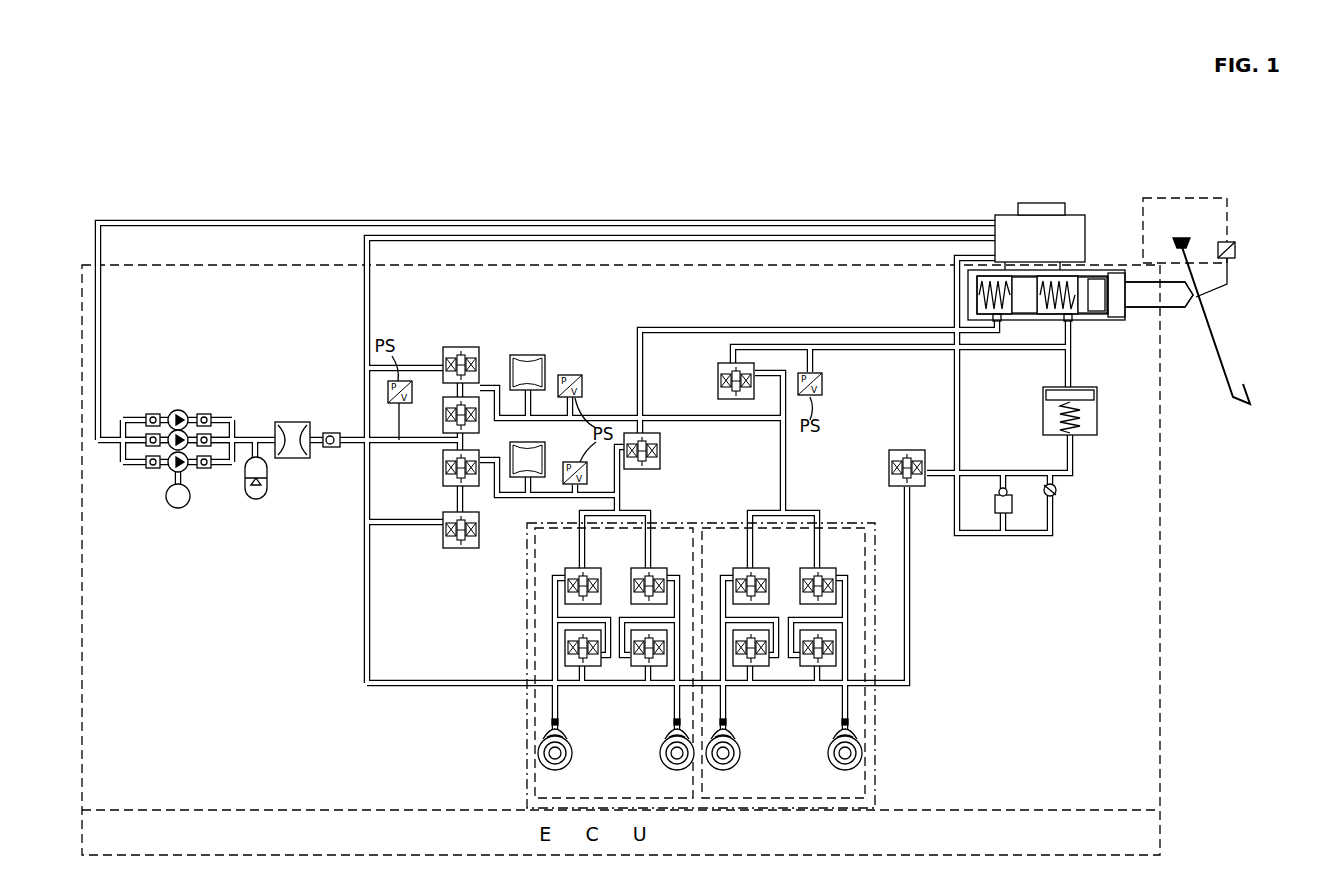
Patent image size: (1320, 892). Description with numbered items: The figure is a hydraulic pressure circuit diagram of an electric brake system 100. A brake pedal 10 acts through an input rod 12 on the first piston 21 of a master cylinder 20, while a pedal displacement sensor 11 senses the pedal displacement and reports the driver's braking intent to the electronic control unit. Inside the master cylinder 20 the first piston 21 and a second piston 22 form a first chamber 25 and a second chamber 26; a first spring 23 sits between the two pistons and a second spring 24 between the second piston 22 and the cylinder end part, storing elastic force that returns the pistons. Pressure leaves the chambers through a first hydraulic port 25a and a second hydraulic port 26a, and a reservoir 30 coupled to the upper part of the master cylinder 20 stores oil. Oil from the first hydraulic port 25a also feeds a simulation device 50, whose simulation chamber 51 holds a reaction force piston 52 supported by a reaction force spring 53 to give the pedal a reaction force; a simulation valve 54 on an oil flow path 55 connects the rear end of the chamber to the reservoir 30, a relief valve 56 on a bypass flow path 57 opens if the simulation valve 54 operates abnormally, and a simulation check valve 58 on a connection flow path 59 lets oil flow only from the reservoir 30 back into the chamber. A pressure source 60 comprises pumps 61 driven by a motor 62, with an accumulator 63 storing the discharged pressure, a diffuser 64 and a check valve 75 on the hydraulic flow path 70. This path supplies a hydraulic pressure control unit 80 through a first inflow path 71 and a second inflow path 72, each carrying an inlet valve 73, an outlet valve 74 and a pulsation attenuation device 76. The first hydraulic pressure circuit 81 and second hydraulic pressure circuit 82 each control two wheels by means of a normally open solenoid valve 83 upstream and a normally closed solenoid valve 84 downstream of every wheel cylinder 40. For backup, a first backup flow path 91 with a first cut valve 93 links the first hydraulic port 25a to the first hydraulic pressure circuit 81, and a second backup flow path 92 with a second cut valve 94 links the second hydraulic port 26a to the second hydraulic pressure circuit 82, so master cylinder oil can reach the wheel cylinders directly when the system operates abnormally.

The electric brake system 100 is at (750, 197).
The brake pedal 10 is at (1232, 376).
The pedal displacement sensor 11 is at (1236, 250).
The input rod 12 is at (1172, 305).
The master cylinder 20 is at (1106, 322).
The first piston 21 is at (1095, 278).
The second piston 22 is at (1022, 290).
The first spring 23 is at (1070, 290).
The second spring 24 is at (979, 295).
The first chamber 25 is at (1053, 290).
The first hydraulic port 25a is at (1072, 321).
The second chamber 26 is at (990, 290).
The second hydraulic port 26a is at (1000, 320).
The reservoir 30 is at (1010, 215).
The wheel cylinder 40 is at (660, 740).
The simulation device 50 is at (1055, 560).
The simulation chamber 51 is at (1094, 434).
The reaction force piston 52 is at (1092, 394).
The reaction force spring 53 is at (1074, 419).
The simulation valve 54 is at (906, 450).
The oil flow path 55 is at (910, 525).
The relief valve 56 is at (997, 514).
The bypass flow path 57 is at (1005, 520).
The simulation check valve 58 is at (1057, 492).
The connection flow path 59 is at (1052, 524).
The pressure source 60 is at (133, 485).
The pump 61 is at (178, 410).
The motor 62 is at (176, 508).
The accumulator 63 is at (253, 499).
The diffuser 64 is at (290, 422).
The hydraulic flow path 70 is at (350, 444).
The first inflow path 71 is at (608, 418).
The second inflow path 72 is at (545, 495).
The inlet valve 73 is at (444, 412).
The outlet valve 74 is at (456, 347).
The check valve 75 is at (332, 433).
The pulsation attenuation device 76 is at (545, 360).
The hydraulic pressure control unit 80 is at (717, 808).
The first hydraulic pressure circuit 81 is at (768, 800).
The second hydraulic pressure circuit 82 is at (668, 800).
The normally open type solenoid valve 83 is at (565, 586).
The normally closed type solenoid valve 84 is at (565, 646).
The first backup flow path 91 is at (812, 347).
The second backup flow path 92 is at (697, 329).
The first cut valve 93 is at (718, 385).
The second cut valve 94 is at (660, 455).